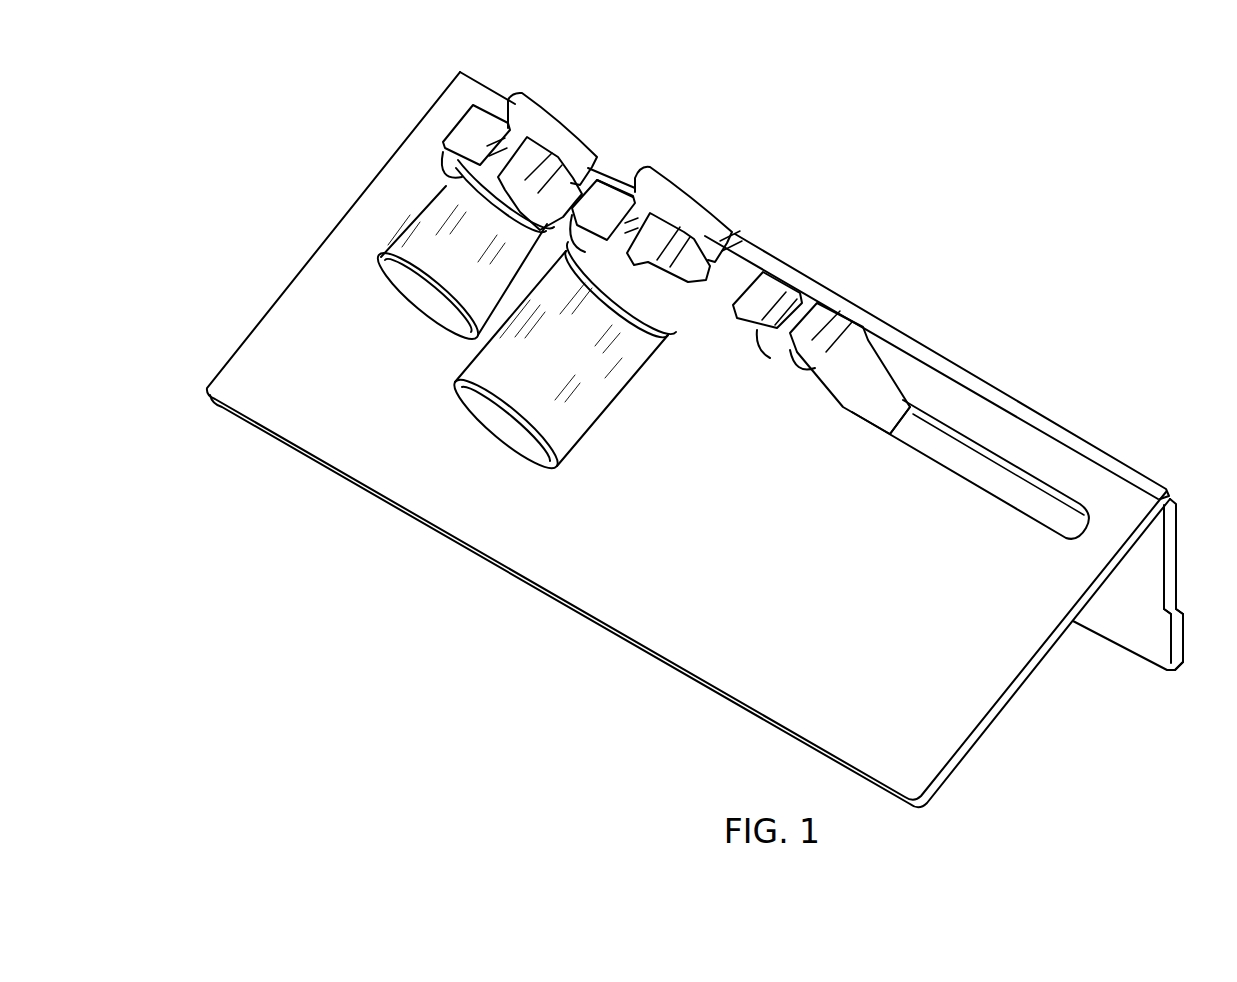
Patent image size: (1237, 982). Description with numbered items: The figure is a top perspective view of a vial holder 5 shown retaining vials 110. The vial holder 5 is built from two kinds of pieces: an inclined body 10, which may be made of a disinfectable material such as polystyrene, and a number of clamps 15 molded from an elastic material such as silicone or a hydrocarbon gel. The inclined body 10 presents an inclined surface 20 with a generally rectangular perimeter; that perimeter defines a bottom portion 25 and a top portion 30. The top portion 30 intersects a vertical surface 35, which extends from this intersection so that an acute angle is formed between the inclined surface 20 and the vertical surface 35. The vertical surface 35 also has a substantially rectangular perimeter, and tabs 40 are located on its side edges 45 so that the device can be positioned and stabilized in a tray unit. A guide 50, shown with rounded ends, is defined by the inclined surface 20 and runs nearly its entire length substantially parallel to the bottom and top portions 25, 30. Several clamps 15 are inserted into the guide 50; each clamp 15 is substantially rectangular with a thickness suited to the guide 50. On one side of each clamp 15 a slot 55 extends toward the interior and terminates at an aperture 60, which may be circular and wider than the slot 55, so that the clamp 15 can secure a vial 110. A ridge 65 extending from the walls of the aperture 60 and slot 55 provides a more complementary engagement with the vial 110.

The vial holder 5 is at (284, 175).
The inclined body 10 is at (824, 608).
The clamp 15 is at (463, 132).
The inclined surface 20 is at (973, 690).
The bottom portion 25 is at (753, 718).
The top portion 30 is at (1095, 472).
The vertical surface 35 is at (1150, 557).
The tab 40 is at (1176, 647).
The side edge 45 is at (1173, 587).
The guide 50 is at (1000, 452).
The slot 55 is at (807, 304).
The aperture 60 is at (800, 366).
The ridge 65 is at (767, 345).
The vial 110 is at (585, 361).